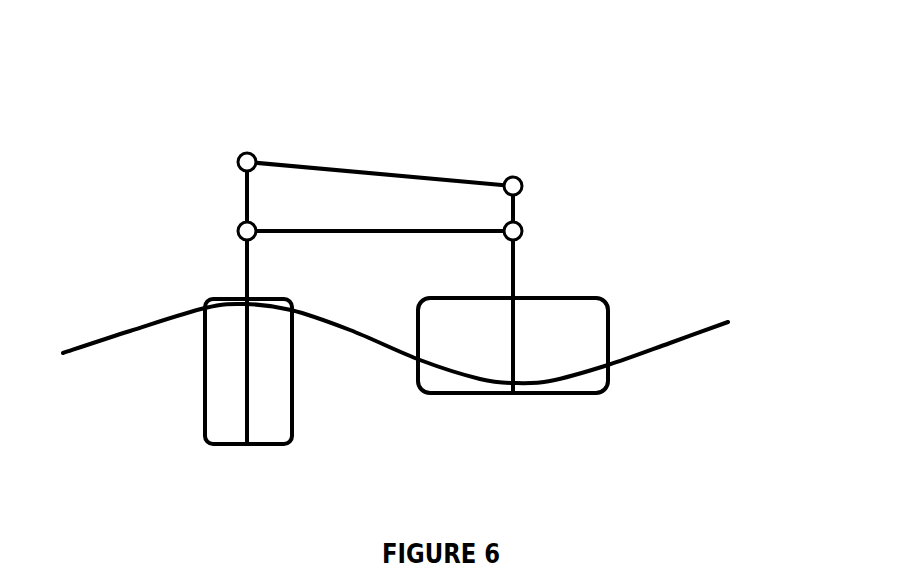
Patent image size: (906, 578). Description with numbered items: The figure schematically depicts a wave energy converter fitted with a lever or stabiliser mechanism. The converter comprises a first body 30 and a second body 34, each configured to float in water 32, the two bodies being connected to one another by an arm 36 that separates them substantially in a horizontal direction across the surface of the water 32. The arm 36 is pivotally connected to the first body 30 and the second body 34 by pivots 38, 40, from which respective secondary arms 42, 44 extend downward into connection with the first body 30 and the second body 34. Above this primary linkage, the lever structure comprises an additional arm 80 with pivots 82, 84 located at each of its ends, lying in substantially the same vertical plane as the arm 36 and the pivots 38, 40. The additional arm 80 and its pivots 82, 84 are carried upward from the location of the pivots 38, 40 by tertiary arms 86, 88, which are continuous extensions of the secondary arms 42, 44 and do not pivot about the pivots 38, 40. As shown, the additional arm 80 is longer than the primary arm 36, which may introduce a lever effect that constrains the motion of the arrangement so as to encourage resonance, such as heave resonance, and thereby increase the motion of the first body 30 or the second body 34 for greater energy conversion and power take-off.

The first body 30 is at (213, 428).
The water 32 is at (683, 352).
The second body 34 is at (445, 383).
The arm 36 is at (395, 238).
The pivot 38 is at (240, 225).
The pivot 40 is at (523, 226).
The secondary arm 42 is at (242, 282).
The secondary arm 44 is at (517, 277).
The additional arm 80 is at (383, 170).
The pivot 82 is at (255, 155).
The pivot 84 is at (514, 177).
The tertiary arm 86 is at (253, 188).
The tertiary arm 88 is at (505, 207).